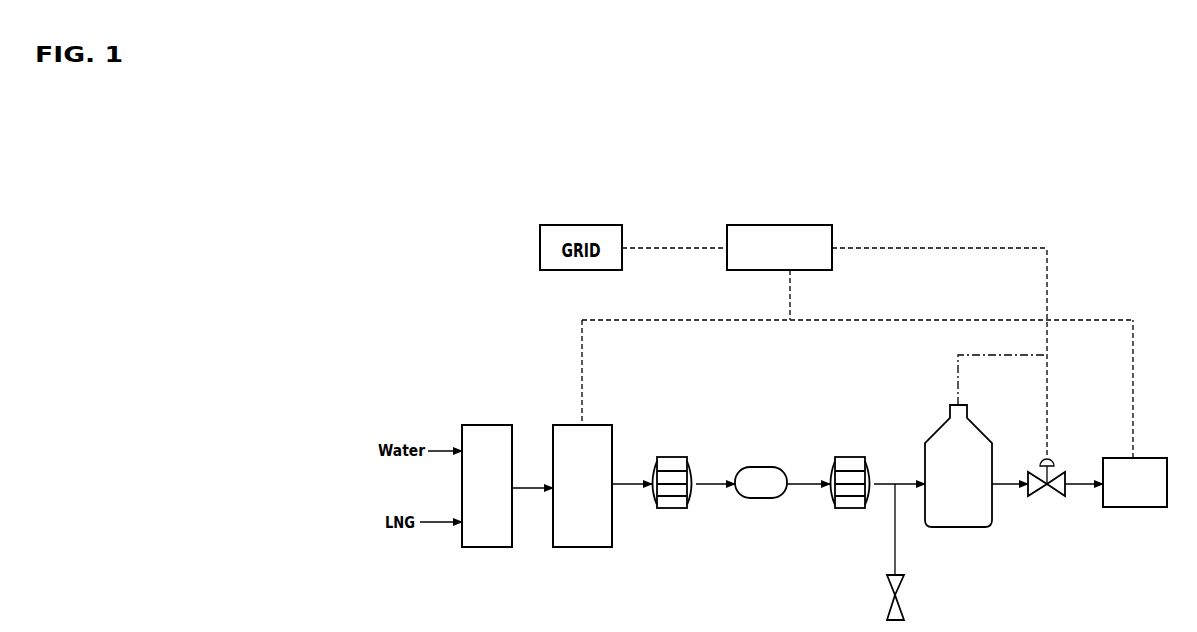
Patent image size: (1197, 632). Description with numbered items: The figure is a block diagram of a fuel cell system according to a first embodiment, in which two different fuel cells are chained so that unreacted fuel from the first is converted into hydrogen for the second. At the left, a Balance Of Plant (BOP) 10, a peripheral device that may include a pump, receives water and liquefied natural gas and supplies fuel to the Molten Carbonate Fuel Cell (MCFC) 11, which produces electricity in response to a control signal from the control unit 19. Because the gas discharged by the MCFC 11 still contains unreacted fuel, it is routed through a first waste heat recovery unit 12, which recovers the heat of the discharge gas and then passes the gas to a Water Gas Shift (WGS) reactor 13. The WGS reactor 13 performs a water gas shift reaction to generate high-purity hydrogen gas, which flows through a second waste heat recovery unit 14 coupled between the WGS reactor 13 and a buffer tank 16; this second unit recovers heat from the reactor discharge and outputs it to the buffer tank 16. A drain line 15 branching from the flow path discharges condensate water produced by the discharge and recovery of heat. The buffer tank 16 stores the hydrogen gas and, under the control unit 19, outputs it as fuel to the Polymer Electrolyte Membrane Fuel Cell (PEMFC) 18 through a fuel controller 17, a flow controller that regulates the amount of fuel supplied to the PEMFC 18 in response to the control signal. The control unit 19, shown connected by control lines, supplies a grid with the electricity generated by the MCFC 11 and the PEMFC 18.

The Balance Of Plant (BOP) 10 is at (486, 425).
The Molten Carbonate Fuel Cell (MCFC) 11 is at (566, 425).
The first waste heat recovery unit 12 is at (670, 457).
The Water Gas Shift (WGS) reactor 13 is at (760, 467).
The second waste heat recovery unit 14 is at (850, 457).
The drain line 15 is at (889, 595).
The buffer tank 16 is at (958, 527).
The fuel controller 17 is at (1040, 493).
The Polymer Electrolyte Membrane Fuel Cell (PEMFC) 18 is at (1115, 458).
The control unit 19 is at (790, 225).